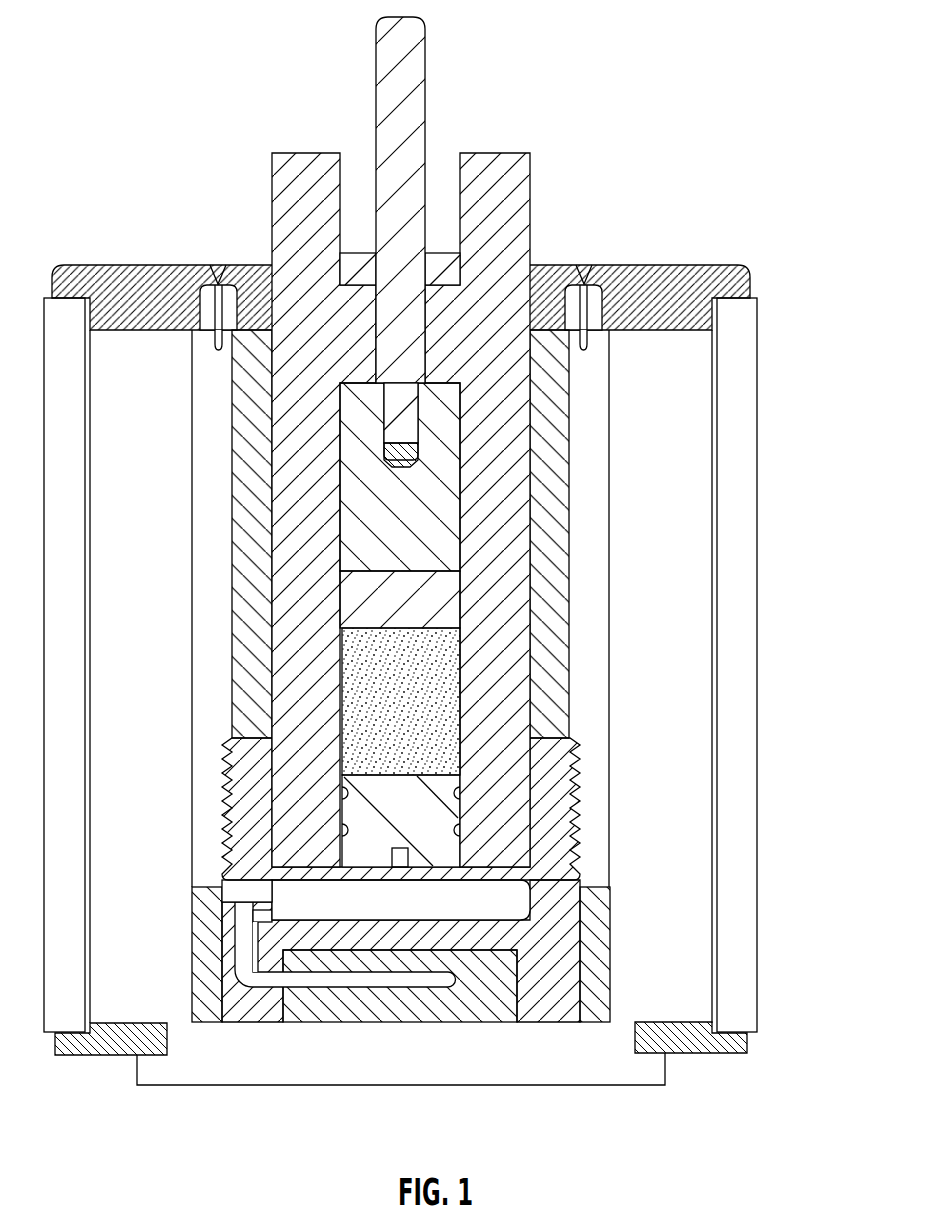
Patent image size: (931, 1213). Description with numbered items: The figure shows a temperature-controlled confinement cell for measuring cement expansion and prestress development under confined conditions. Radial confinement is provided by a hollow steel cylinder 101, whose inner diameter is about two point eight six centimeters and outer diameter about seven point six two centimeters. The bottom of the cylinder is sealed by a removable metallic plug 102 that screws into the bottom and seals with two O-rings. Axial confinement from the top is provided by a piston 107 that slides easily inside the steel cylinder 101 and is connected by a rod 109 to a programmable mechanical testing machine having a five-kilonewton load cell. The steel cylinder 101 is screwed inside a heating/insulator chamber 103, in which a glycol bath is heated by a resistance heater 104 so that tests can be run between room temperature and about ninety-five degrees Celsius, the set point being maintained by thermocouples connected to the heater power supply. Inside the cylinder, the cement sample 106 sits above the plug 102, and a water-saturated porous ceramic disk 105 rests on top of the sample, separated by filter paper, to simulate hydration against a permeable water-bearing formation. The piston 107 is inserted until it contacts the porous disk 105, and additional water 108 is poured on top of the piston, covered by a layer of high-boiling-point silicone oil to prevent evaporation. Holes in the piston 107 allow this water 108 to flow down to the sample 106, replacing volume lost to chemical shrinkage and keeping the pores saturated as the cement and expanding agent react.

The hollow steel cylinder 101 is at (530, 170).
The removable metallic plug 102 is at (360, 812).
The heating/insulator chamber 103 is at (727, 837).
The resistance heater 104 is at (548, 912).
The porous ceramic disk 105 is at (437, 600).
The cement sample 106 is at (462, 663).
The piston 107 is at (437, 493).
The water 108 is at (470, 343).
The rod 109 is at (427, 52).